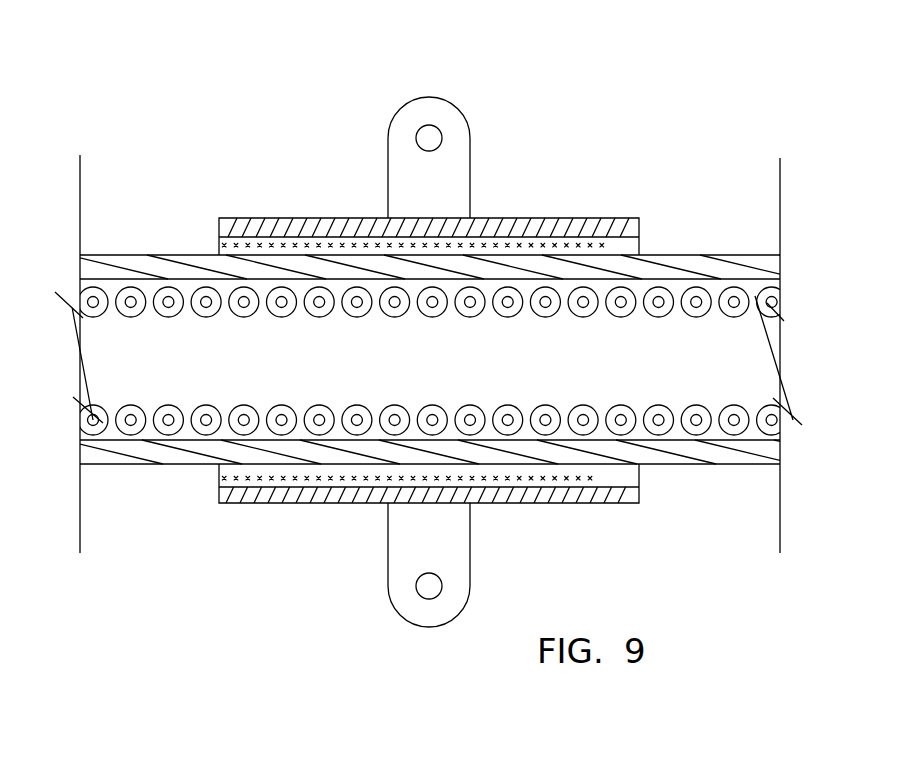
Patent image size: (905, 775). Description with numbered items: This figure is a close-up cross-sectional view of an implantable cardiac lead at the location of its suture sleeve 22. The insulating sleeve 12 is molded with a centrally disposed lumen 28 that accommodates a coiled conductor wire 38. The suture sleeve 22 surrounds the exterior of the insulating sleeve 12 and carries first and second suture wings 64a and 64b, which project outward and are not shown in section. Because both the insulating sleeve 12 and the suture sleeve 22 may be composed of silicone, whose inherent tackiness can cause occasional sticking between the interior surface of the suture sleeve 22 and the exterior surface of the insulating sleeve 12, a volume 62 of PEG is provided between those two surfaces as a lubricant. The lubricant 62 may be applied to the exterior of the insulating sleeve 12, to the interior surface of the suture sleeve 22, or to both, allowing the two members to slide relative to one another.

The insulating sleeve 12 is at (672, 256).
The suture sleeve 22 is at (600, 504).
The lumen 28 is at (176, 372).
The coiled conductor wire 38 is at (695, 420).
The volume of PEG 62 is at (570, 252).
The first suture wing 64a is at (466, 155).
The second suture wing 64b is at (470, 577).